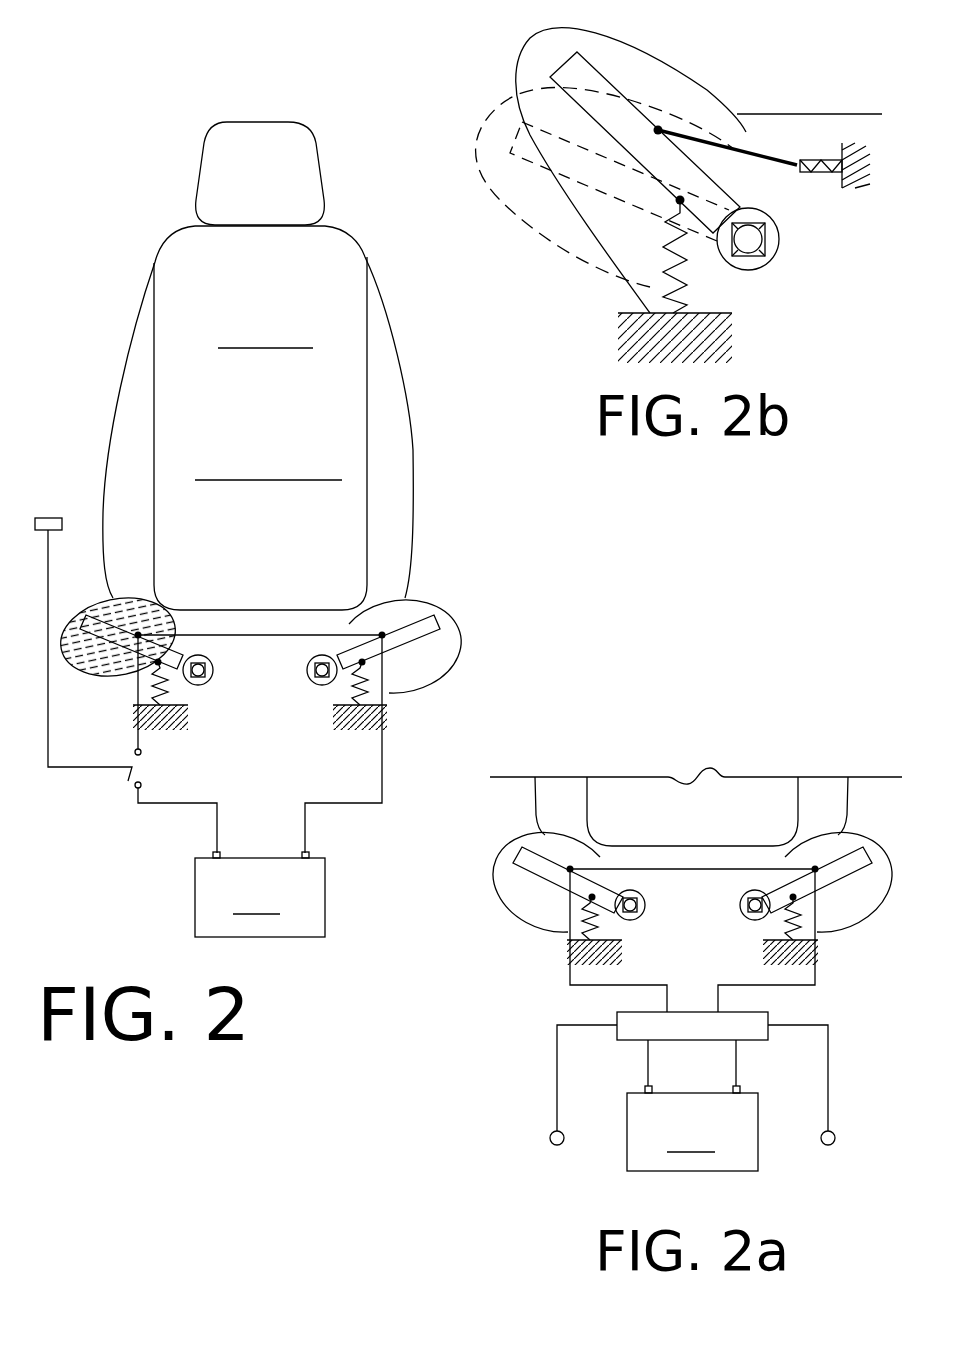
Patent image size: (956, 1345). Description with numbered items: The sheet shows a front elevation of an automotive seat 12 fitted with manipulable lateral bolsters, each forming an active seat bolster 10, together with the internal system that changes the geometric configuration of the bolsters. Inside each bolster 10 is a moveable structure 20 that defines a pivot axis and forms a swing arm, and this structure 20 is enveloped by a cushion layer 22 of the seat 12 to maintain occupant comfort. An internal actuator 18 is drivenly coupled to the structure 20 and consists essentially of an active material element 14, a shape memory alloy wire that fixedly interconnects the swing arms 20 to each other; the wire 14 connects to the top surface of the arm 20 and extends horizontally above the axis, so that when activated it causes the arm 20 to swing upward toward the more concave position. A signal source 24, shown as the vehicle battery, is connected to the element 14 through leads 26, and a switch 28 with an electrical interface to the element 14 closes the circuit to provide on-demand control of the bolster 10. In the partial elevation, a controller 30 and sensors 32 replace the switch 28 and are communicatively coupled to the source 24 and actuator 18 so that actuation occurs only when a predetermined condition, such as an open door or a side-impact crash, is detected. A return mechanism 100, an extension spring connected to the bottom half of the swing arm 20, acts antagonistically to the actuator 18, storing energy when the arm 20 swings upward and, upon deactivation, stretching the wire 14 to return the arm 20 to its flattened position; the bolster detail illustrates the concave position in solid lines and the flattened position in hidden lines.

In FIG. 2, the active seat bolster 10 is at (477, 623).
In FIG. 2B, the active seat bolster 10 is at (480, 83).
In FIG. 2A, the active seat bolster 10 is at (562, 828).
In FIG. 2, the automotive seat 12 is at (107, 350).
In FIG. 2, the active material element 14 is at (300, 635).
In FIG. 2B, the active material element 14 is at (786, 166).
In FIG. 2A, the active material element 14 is at (765, 868).
In FIG. 2, the actuator 18 is at (270, 677).
In FIG. 2, the moveable structure 20 is at (410, 645).
In FIG. 2, the cushion layer 22 is at (105, 645).
In FIG. 2, the signal source 24 is at (260, 894).
In FIG. 2A, the signal source 24 is at (692, 1105).
In FIG. 2, the leads 26 is at (343, 805).
In FIG. 2, the switch 28 is at (35, 520).
In FIG. 2A, the controller 30 is at (617, 1015).
In FIG. 2A, the sensor 32 is at (550, 1143).
In FIG. 2B, the return mechanism 100 is at (687, 280).